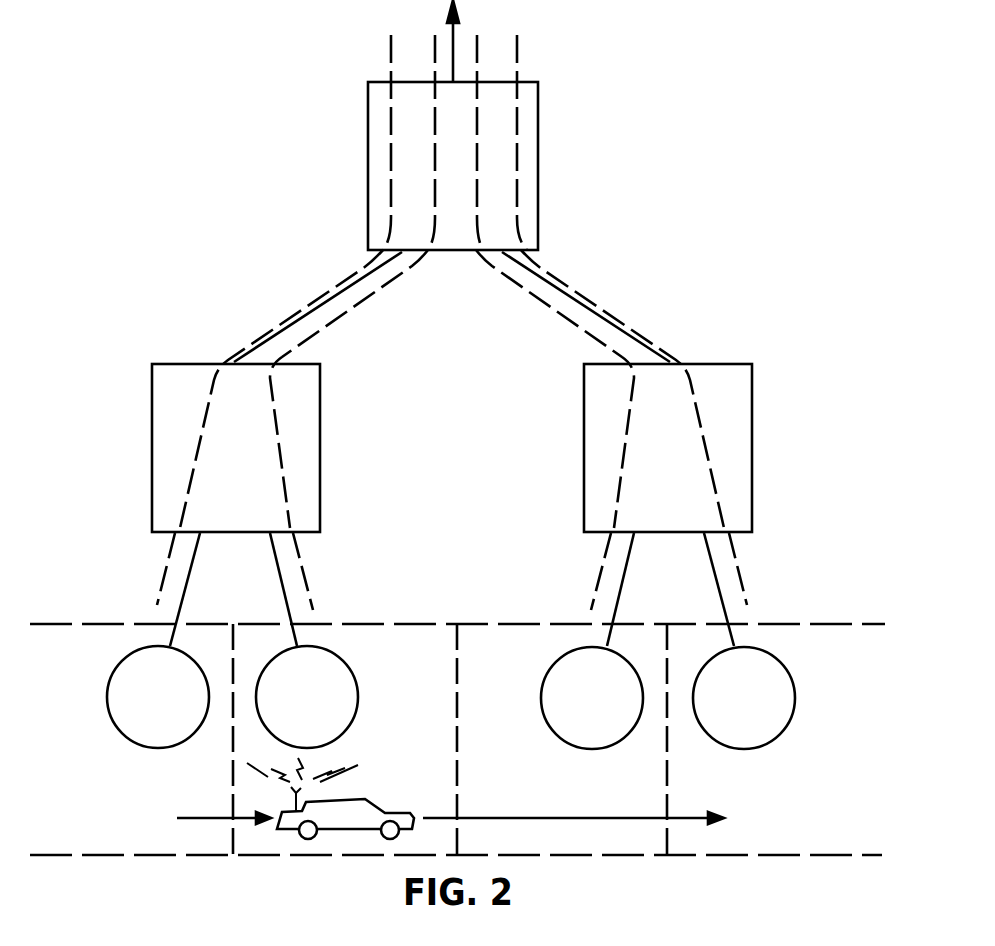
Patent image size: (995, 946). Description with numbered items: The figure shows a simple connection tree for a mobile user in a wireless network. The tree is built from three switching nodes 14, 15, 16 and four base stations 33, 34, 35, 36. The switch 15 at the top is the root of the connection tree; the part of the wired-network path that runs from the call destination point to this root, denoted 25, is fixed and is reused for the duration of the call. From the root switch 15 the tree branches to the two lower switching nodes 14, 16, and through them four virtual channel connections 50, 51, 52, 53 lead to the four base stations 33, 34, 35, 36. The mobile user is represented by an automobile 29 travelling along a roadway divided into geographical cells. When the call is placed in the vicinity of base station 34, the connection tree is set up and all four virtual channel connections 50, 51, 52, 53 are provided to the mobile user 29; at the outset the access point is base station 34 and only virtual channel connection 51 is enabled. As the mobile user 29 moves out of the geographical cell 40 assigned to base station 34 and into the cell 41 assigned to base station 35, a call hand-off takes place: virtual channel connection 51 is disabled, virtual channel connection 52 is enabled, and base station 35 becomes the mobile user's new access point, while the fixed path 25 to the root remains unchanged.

The switching node 14 is at (158, 412).
The switch 15 is at (528, 147).
The switching node 16 is at (742, 415).
The fixed path in the wired network 25 is at (455, 31).
The automobile 29 is at (383, 812).
The base station 33 is at (110, 695).
The base station 34 is at (350, 693).
The base station 35 is at (557, 710).
The base station 36 is at (783, 698).
The geographical cell 40 is at (395, 643).
The cell 41 is at (518, 640).
The virtual channel connection 50 is at (187, 477).
The virtual channel connection 51 is at (283, 475).
The virtual channel connection 52 is at (620, 478).
The virtual channel connection 53 is at (713, 478).